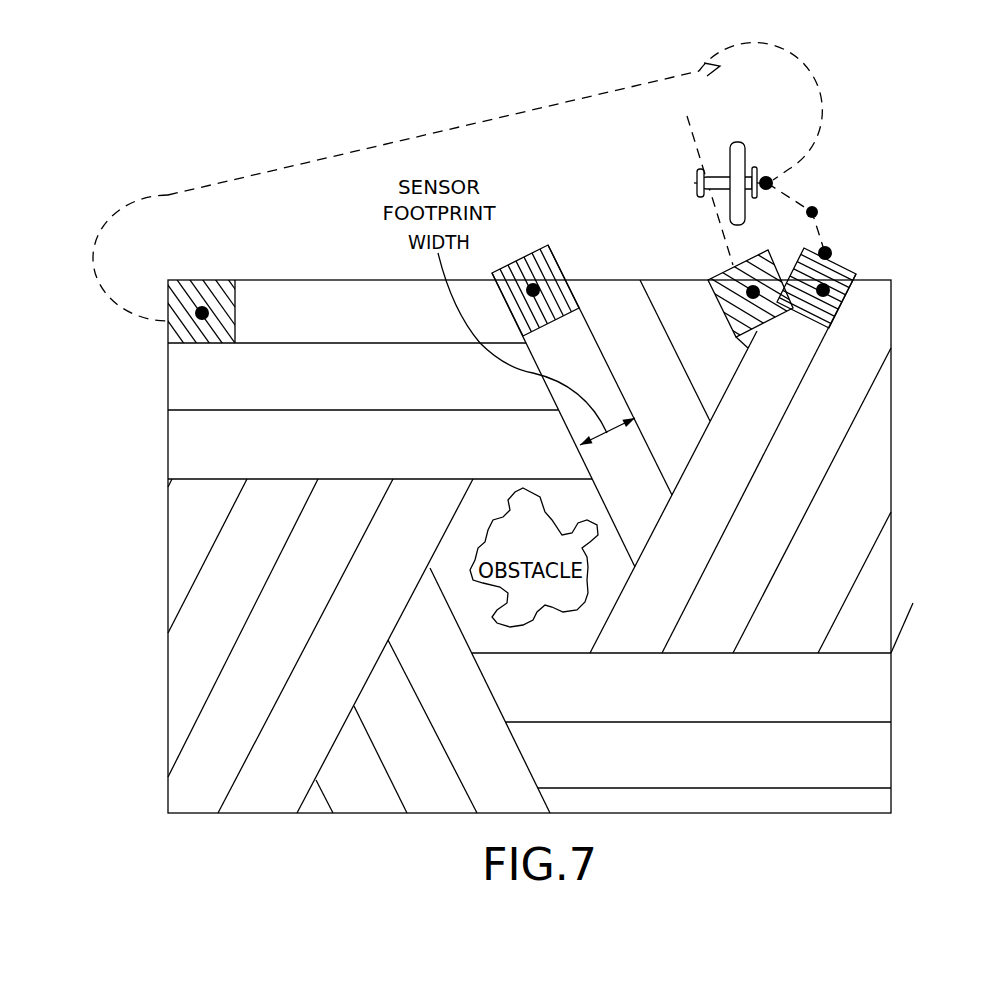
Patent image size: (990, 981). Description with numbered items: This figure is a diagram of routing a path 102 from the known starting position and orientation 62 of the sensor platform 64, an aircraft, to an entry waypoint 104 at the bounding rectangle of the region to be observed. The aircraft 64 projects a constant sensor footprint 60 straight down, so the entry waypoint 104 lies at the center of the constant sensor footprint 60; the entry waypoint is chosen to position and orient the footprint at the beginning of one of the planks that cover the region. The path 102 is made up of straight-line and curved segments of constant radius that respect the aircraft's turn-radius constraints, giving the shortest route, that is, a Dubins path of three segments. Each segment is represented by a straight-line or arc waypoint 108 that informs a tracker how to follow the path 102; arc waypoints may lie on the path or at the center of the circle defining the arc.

The constant sensor footprint 60 is at (727, 270).
The starting position and orientation 62 is at (775, 182).
The sensor platform 64 is at (748, 165).
The path 102 is at (874, 209).
The entry waypoint 104 is at (832, 253).
The arc waypoint 108 is at (788, 192).